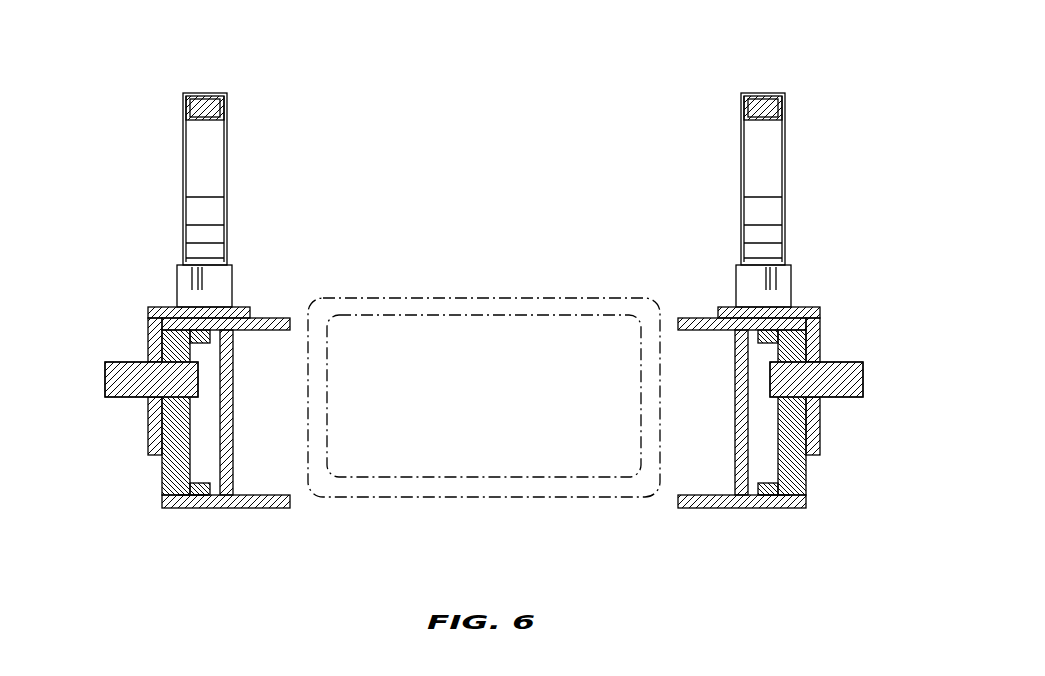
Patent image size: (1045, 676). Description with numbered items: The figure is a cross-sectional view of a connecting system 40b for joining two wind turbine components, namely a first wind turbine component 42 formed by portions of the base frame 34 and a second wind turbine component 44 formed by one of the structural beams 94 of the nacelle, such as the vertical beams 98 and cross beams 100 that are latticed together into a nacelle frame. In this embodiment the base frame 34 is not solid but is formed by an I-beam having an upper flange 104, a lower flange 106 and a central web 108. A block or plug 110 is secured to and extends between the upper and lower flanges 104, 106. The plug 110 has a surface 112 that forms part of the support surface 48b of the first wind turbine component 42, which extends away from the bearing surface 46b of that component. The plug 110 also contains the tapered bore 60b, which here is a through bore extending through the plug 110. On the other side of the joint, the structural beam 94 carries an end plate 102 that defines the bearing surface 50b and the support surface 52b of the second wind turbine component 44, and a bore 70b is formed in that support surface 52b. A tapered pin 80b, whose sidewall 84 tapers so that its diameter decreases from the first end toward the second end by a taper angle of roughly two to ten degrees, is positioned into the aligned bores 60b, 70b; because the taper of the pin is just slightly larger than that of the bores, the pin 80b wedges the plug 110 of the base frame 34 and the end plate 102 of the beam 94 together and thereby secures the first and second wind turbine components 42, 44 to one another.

The base frame 34 is at (472, 441).
The first wind turbine component 42 is at (402, 512).
The connecting system 40b is at (95, 282).
The second wind turbine component 44 is at (190, 137).
The bearing surface 46b is at (249, 306).
The support surface 48b is at (480, 443).
The bearing surface 50b is at (205, 338).
The support surface 52b is at (165, 428).
The tapered bore 60b is at (165, 402).
The bore 70b is at (155, 425).
The tapered pin 80b is at (481, 377).
The sidewall 84 is at (128, 400).
The structural beam 94 is at (442, 180).
The vertical beam 98 is at (442, 180).
The cross beam 100 is at (442, 180).
The end plate 102 is at (158, 302).
The upper flange 104 is at (290, 326).
The lower flange 106 is at (258, 509).
The central web 108 is at (233, 402).
The plug 110 is at (181, 500).
The surface 112 is at (148, 345).